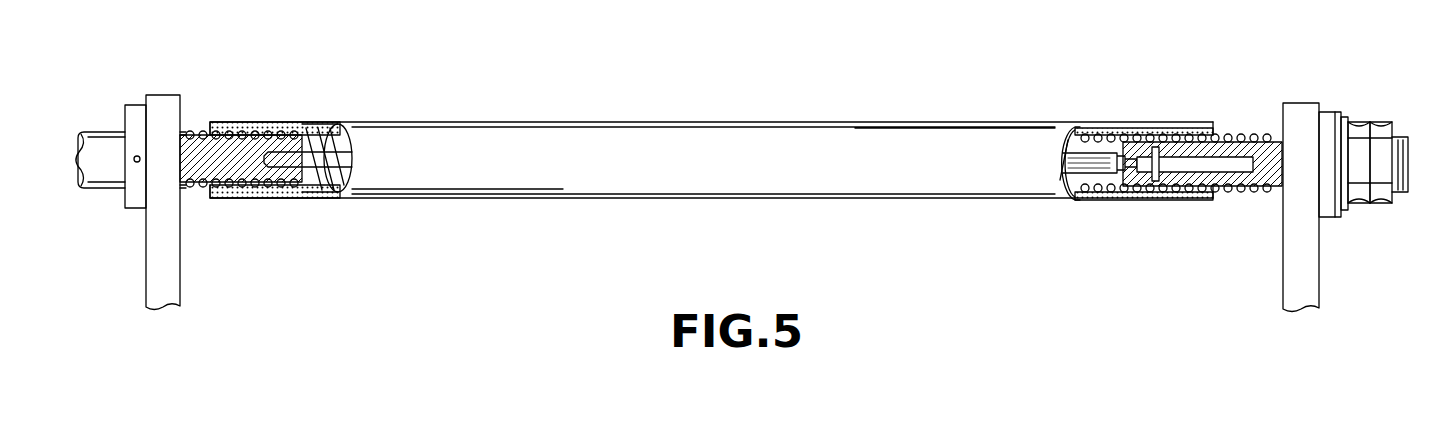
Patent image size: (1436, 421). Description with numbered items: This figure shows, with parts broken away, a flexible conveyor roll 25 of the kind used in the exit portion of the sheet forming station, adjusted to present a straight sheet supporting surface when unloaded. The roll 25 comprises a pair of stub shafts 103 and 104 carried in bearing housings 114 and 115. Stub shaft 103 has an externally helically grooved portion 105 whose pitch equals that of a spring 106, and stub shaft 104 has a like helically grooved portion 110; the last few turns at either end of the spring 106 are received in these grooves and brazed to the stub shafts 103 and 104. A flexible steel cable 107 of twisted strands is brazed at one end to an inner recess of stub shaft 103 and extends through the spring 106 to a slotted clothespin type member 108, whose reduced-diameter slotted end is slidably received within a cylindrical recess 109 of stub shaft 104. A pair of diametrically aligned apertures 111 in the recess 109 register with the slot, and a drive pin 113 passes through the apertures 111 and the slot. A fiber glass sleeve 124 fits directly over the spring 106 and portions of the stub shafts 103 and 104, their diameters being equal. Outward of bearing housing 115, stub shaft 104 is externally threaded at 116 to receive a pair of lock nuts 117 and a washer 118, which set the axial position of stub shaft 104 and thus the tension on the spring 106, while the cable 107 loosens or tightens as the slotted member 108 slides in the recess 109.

The flexible conveyor roll 25 is at (839, 215).
The stub shaft 103 is at (182, 192).
The stub shaft 104 is at (1278, 197).
The helically grooved portion 105 is at (202, 121).
The spring 106 is at (338, 145).
The flexible steel cable 107 is at (348, 158).
The slotted member 108 is at (1120, 145).
The cylindrical recess 109 is at (1260, 135).
The helically grooved portion 110 is at (1168, 197).
The apertures 111 is at (1157, 147).
The drive pin 113 is at (1173, 142).
The bearing housing 114 is at (140, 110).
The bearing housing 115 is at (1332, 125).
The externally threaded portion 116 is at (1400, 197).
The lock nuts 117 is at (1374, 204).
The washer 118 is at (1345, 117).
The fiber glass sleeve 124 is at (1103, 197).